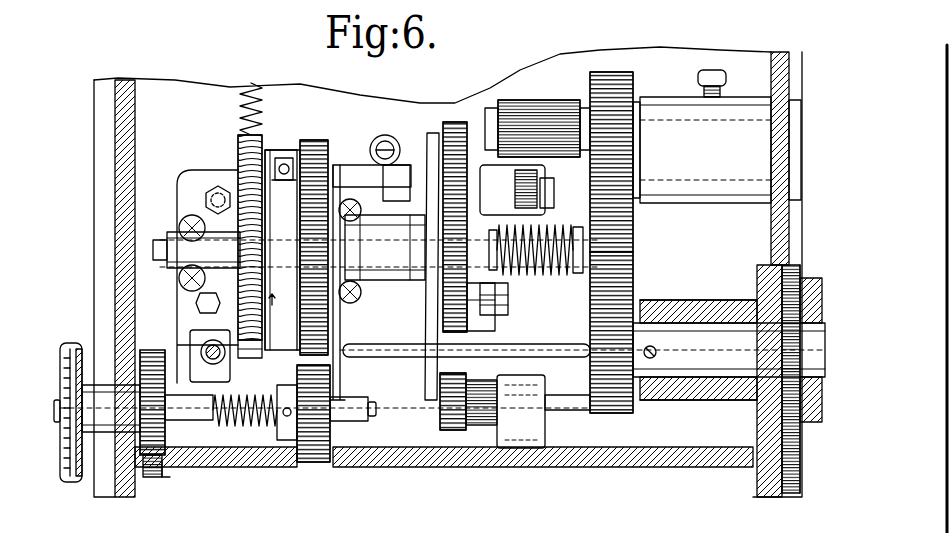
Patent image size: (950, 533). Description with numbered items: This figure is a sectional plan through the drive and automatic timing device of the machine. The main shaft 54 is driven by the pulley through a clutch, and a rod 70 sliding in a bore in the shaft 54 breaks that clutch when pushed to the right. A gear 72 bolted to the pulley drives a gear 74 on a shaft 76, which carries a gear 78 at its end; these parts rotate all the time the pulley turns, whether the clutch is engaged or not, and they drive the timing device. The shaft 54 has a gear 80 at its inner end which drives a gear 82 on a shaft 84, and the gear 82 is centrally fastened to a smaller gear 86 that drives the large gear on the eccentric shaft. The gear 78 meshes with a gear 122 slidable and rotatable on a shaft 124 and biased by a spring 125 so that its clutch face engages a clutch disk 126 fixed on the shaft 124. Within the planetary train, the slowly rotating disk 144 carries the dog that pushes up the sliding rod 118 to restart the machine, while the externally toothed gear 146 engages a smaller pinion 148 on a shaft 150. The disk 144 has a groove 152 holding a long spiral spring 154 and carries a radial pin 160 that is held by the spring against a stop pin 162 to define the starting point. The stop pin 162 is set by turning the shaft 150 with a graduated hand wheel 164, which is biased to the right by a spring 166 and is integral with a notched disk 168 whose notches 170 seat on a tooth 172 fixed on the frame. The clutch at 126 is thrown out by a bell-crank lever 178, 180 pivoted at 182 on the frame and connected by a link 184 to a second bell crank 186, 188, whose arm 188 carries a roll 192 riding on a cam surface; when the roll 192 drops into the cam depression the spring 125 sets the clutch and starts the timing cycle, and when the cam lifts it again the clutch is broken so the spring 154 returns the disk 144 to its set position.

The shaft 54 is at (700, 328).
The rod 70 is at (408, 358).
The gear 72 is at (790, 328).
The gear 74 is at (790, 455).
The shaft 76 is at (560, 411).
The gear 78 is at (455, 431).
The gear 80 is at (610, 390).
The gear 82 is at (622, 152).
The shaft 84 is at (688, 180).
The gear 86 is at (536, 105).
The sliding rod 118 is at (218, 356).
The gear 122 is at (466, 315).
The shaft 124 is at (156, 240).
The spring 125 is at (546, 274).
The clutch disk 126 is at (445, 133).
The disk 144 is at (272, 160).
The gear 146 is at (312, 140).
The pinion 148 is at (312, 462).
The shaft 150 is at (57, 412).
The groove 152 is at (240, 356).
The spiral spring 154 is at (241, 108).
The pin 160 is at (238, 148).
The pin 162 is at (284, 181).
The hand wheel 164 is at (72, 342).
The spring 166 is at (238, 430).
The notched disk 168 is at (152, 350).
The notches 170 is at (166, 477).
The tooth 172 is at (148, 477).
The bell-crank lever arm 178 is at (498, 300).
The bell-crank lever arm 180 is at (427, 175).
The pivot 182 is at (481, 163).
The link 184 is at (385, 194).
The bell crank arm 186 is at (378, 180).
The bell crank arm 188 is at (375, 142).
The roll 192 is at (386, 141).